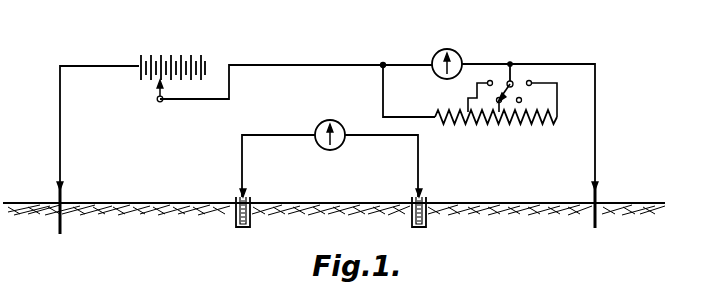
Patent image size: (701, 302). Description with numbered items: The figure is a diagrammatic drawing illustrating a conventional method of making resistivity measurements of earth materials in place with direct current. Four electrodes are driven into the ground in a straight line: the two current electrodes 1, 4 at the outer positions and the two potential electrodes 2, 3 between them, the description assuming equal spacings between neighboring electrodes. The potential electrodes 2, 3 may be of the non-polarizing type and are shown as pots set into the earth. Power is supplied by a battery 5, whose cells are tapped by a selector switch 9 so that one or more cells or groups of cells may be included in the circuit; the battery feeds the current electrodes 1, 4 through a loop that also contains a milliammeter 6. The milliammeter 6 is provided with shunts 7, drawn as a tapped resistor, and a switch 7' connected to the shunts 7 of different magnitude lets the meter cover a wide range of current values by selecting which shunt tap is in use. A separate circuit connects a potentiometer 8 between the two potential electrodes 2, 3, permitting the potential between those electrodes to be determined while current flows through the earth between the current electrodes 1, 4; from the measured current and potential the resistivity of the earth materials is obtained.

The current electrode 1 is at (65, 197).
The potential electrode 2 is at (251, 199).
The potential electrode 3 is at (428, 198).
The current electrode 4 is at (600, 195).
The battery 5 is at (174, 59).
The milliammeter 6 is at (458, 56).
The shunts 7 is at (496, 132).
The switch 7' is at (512, 78).
The potentiometer 8 is at (336, 150).
The selector switch 9 is at (161, 103).